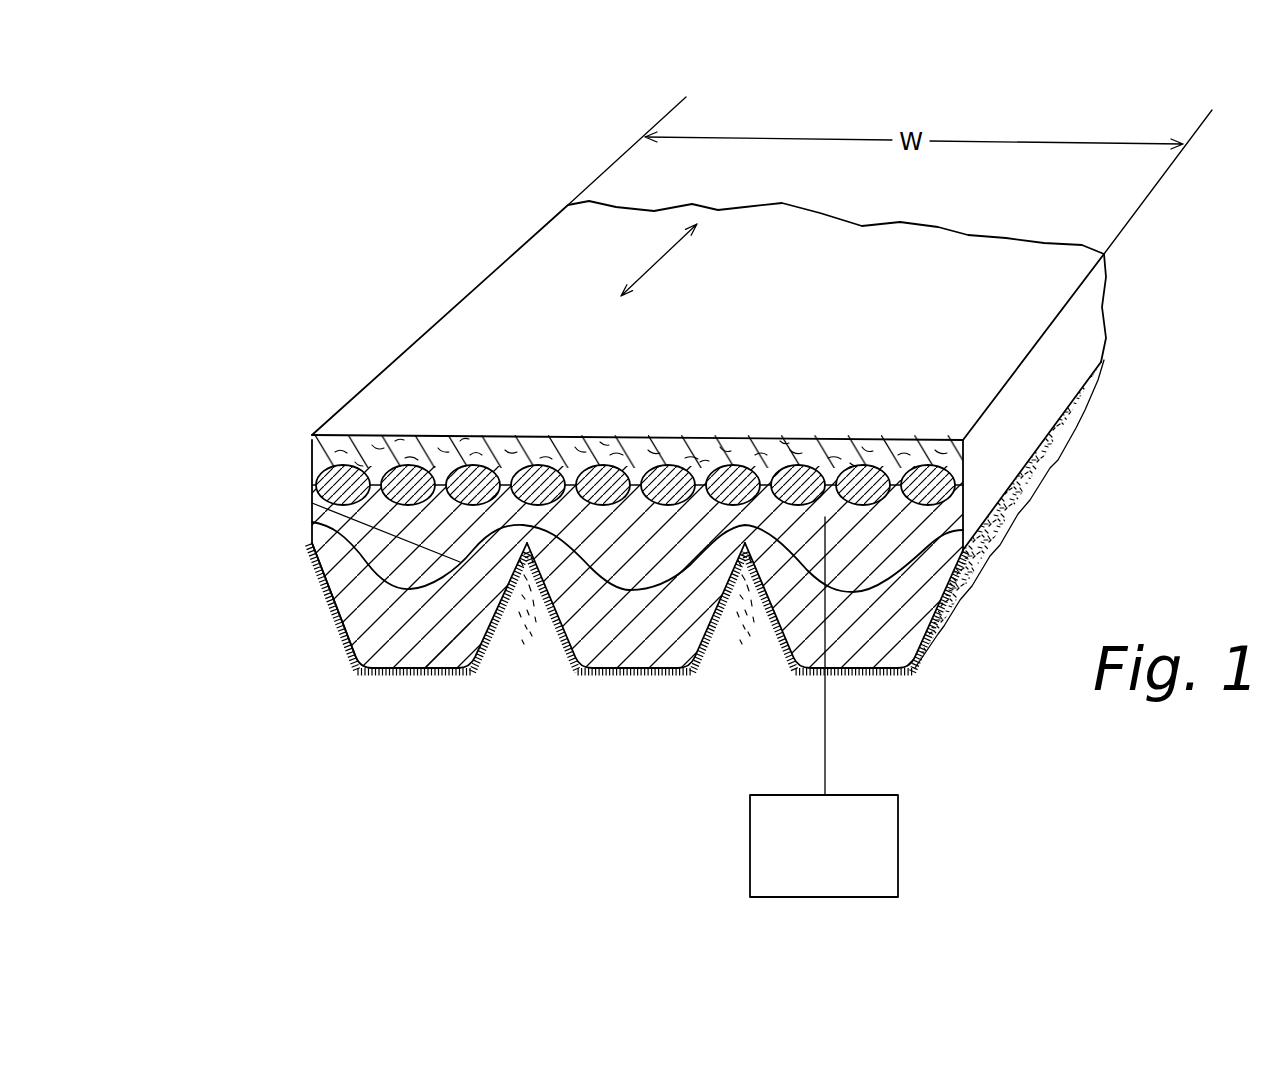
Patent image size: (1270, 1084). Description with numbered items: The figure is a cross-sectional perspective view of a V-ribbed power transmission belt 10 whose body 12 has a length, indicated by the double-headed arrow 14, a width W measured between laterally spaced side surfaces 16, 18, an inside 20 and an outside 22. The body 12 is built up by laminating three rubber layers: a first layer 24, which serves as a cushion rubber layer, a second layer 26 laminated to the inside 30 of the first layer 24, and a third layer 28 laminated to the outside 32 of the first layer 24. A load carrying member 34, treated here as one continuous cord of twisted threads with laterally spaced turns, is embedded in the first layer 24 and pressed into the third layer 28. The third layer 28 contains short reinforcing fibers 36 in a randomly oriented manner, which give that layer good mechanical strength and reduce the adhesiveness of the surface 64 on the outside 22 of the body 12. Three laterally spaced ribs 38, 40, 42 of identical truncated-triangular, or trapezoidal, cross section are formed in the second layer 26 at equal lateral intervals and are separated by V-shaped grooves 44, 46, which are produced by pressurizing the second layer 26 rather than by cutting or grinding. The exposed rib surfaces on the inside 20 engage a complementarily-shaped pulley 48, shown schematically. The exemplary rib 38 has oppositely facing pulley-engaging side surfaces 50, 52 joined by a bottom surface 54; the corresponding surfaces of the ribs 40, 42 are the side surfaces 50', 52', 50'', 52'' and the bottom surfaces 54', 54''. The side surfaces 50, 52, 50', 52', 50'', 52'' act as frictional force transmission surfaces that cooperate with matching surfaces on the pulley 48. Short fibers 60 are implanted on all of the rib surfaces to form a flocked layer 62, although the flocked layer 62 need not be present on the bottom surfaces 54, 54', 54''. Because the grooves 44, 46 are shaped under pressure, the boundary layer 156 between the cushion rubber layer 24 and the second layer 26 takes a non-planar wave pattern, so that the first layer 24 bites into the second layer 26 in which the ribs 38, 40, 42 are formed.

The power transmission belt 10 is at (982, 451).
The body 12 is at (295, 518).
The double-headed arrow 14 is at (671, 251).
The side surface 16 is at (1085, 317).
The side surface 18 is at (312, 468).
The inside 20 is at (630, 668).
The outside 22 is at (745, 438).
The first layer 24 is at (335, 600).
The second layer 26 is at (453, 650).
The third layer 28 is at (462, 447).
The inside of the first layer 30 is at (350, 660).
The outside of the first layer 32 is at (635, 485).
The load carrying member 34 is at (343, 475).
The short reinforcing fibers 36 is at (515, 455).
The rib 38 is at (415, 640).
The rib 40 is at (613, 642).
The rib 42 is at (863, 637).
The V-shaped groove 44 is at (520, 613).
The V-shaped groove 46 is at (778, 637).
The pulley 48 is at (810, 876).
The pulley-engaging side surface 50 is at (321, 636).
The pulley-engaging side surface 50' is at (546, 641).
The pulley-engaging side surface 50'' is at (754, 669).
The pulley-engaging side surface 52 is at (496, 644).
The pulley-engaging side surface 52' is at (707, 647).
The pulley-engaging side surface 52'' is at (973, 650).
The bottom surface 54 is at (414, 720).
The bottom surface 54' is at (635, 748).
The bottom surface 54'' is at (854, 731).
The short fibers 60 is at (312, 545).
The flocked layer 62 is at (913, 680).
The surface 64 is at (788, 438).
The boundary layer 156 is at (312, 503).